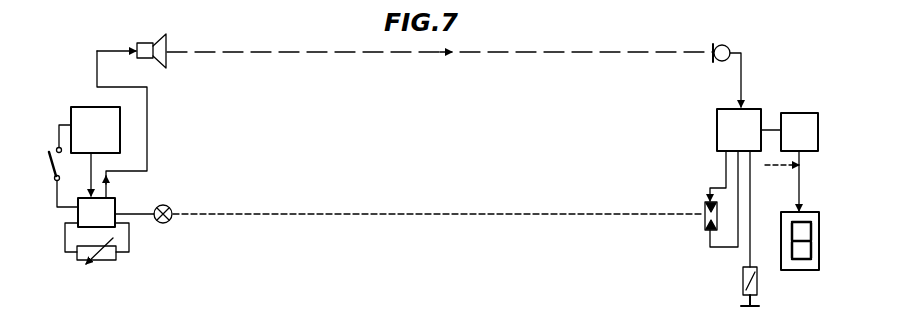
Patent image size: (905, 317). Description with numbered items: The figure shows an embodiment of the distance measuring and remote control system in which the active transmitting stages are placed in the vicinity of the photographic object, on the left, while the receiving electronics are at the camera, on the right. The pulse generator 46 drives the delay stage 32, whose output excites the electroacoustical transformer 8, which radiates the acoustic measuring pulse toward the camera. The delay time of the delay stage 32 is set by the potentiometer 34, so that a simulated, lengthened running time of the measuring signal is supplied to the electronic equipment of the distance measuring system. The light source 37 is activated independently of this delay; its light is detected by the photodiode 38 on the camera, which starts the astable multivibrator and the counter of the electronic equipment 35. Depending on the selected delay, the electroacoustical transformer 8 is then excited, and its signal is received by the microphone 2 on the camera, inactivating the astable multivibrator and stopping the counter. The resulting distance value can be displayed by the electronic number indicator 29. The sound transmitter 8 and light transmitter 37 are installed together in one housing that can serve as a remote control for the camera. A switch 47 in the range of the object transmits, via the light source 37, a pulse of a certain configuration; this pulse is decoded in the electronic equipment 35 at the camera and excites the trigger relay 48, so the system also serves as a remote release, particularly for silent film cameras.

The microphone 2 is at (730, 48).
The electroacoustical transformer 8 is at (145, 43).
The electronic number indicator 29 is at (781, 237).
The delay stage 32 is at (106, 210).
The potentiometer 34 is at (100, 263).
The electronic equipment 35 is at (787, 117).
The light source 37 is at (166, 206).
The photodiode 38 is at (705, 208).
The pulse generator 46 is at (83, 112).
The switch 47 is at (54, 155).
The trigger relay 48 is at (743, 278).